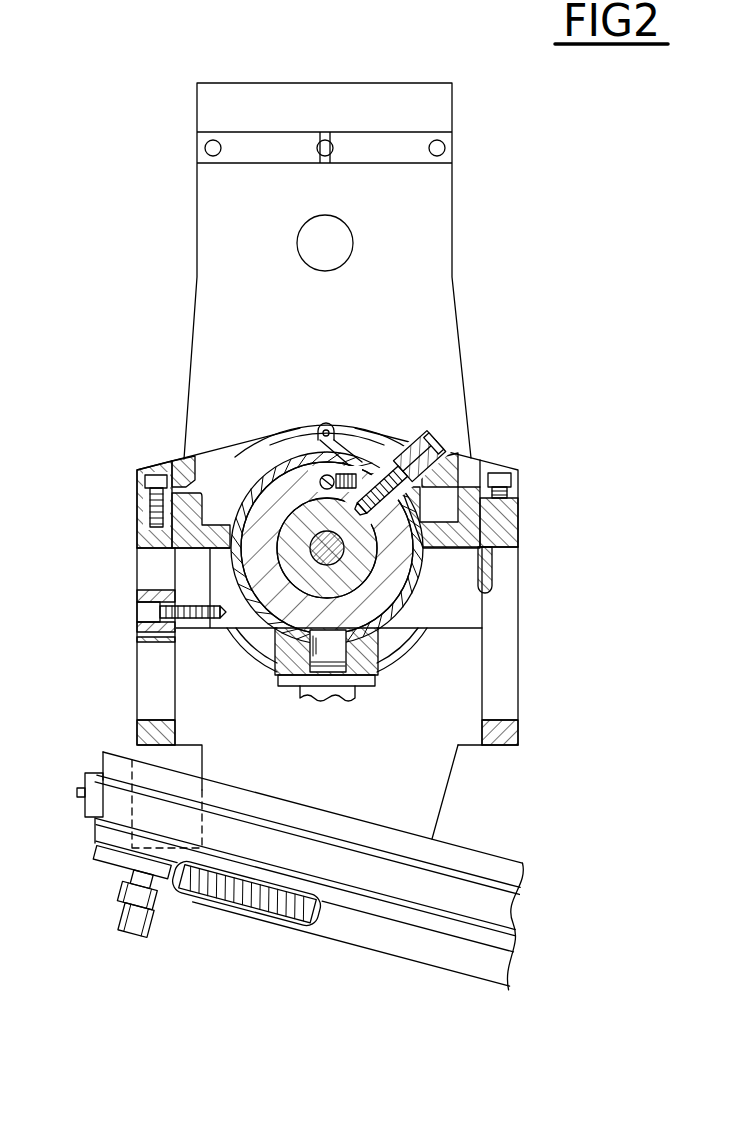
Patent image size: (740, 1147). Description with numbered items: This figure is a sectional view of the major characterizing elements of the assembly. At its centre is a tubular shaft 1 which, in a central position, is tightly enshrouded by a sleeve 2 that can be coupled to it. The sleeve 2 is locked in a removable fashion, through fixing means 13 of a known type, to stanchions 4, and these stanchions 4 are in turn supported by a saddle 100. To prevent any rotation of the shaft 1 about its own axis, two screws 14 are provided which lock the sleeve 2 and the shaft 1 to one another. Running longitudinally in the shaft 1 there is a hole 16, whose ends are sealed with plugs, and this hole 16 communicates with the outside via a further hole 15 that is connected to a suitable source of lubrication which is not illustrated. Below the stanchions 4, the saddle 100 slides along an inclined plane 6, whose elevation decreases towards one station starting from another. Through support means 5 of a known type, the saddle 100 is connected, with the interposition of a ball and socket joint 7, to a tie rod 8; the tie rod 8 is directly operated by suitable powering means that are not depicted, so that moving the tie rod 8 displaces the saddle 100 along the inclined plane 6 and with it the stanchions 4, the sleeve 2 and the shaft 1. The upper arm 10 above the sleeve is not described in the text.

The tubular shaft 1 is at (387, 580).
The sleeve 2 is at (478, 467).
The stanchions 4 is at (153, 698).
The support means 5 is at (192, 763).
The inclined plane 6 is at (478, 892).
The ball and socket joint 7 is at (118, 886).
The tie rod 8 is at (363, 942).
The support arm 10 is at (327, 271).
The fixing means 13 is at (155, 477).
The screws 14 is at (410, 467).
The hole 15 is at (353, 477).
The hole 16 is at (318, 468).
The saddle 100 is at (437, 832).